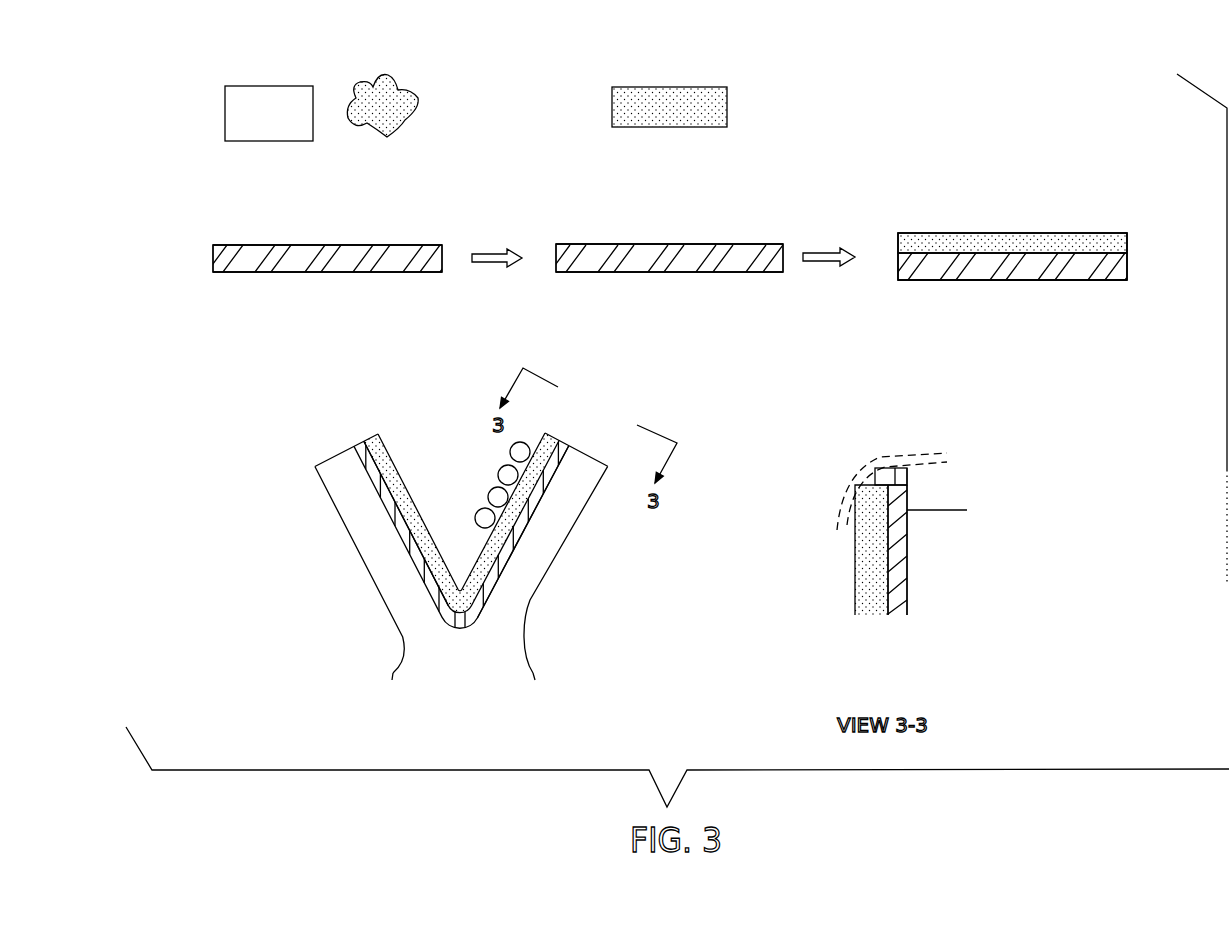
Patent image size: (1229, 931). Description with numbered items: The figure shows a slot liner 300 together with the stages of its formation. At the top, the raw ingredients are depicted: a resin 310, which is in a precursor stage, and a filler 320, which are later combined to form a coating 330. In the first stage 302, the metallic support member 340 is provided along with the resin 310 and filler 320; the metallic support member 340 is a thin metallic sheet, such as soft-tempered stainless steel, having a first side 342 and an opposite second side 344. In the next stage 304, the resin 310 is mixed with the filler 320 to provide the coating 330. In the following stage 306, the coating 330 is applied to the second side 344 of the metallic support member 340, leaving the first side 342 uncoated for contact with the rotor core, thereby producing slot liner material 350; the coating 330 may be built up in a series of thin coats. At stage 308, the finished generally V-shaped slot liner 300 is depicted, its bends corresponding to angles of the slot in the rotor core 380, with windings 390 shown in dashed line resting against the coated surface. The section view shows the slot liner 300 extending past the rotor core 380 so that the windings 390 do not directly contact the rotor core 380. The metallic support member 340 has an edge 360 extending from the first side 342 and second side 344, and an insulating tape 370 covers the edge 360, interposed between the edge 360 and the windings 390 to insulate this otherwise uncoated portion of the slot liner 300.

The slot liner 300 is at (300, 446).
The providing stage 302 is at (258, 300).
The mixing stage 304 is at (568, 300).
The coating application stage 306 is at (962, 305).
The formed slot liner stage 308 is at (408, 706).
The resin 310 is at (225, 112).
The filler 320 is at (405, 120).
The coating 330 is at (727, 106).
The metallic support member 340 is at (213, 257).
The first side 342 is at (327, 273).
The second side 344 is at (287, 245).
The slot liner material 350 is at (1136, 233).
The edge 360 is at (898, 467).
The insulating tape 370 is at (907, 475).
The rotor core 380 is at (562, 533).
The windings 390 is at (510, 455).